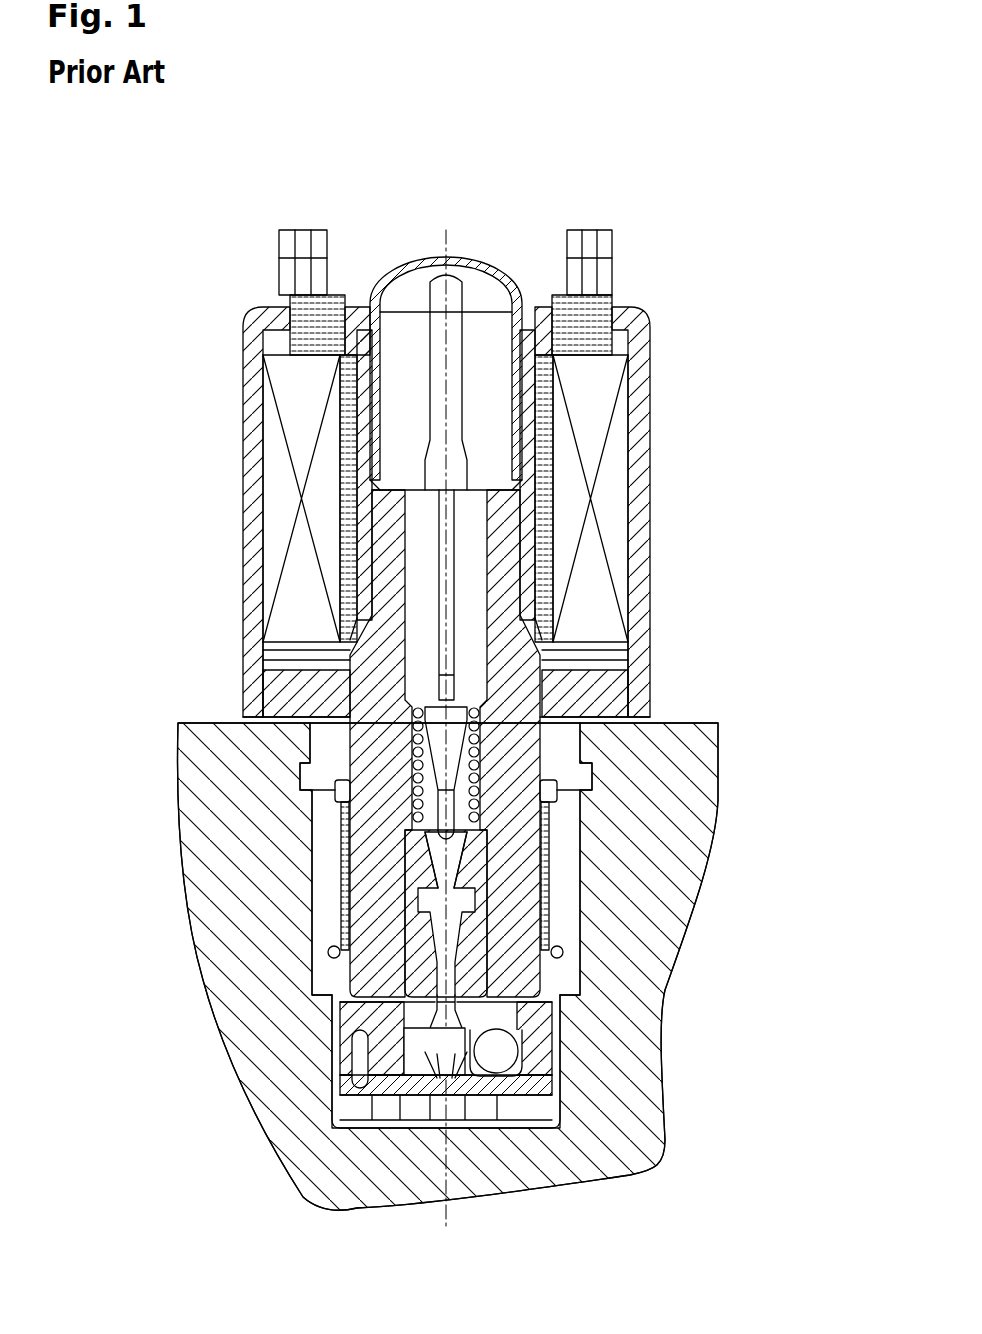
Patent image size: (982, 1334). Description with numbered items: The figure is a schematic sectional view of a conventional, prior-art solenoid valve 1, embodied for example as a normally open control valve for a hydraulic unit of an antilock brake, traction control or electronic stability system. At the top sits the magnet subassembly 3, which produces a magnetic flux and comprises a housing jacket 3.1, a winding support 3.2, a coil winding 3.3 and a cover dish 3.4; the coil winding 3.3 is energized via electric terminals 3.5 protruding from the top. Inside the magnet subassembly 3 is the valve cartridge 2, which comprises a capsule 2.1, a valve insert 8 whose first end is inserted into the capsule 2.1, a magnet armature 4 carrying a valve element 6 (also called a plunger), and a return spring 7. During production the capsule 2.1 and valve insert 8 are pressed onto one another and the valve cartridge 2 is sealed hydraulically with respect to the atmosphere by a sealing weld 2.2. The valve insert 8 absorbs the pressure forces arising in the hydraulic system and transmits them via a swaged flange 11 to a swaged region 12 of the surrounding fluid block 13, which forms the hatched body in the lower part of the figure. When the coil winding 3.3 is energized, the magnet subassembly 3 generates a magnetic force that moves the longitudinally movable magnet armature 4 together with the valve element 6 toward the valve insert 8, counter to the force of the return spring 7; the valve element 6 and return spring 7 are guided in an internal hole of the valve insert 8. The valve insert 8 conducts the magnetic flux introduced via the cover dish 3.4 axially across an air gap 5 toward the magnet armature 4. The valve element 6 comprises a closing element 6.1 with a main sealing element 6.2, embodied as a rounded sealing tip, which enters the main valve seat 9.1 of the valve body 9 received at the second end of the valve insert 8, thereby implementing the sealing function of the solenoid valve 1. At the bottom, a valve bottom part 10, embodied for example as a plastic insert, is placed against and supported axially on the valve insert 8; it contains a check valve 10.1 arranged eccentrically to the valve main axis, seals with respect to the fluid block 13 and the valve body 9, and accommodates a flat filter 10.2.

The solenoid valve 1 is at (185, 260).
The valve cartridge 2 is at (433, 196).
The capsule 2.1 is at (500, 292).
The sealing weld 2.2 is at (362, 571).
The magnet subassembly 3 is at (690, 210).
The housing jacket 3.1 is at (640, 417).
The winding support 3.2 is at (355, 404).
The coil winding 3.3 is at (612, 467).
The cover dish 3.4 is at (610, 688).
The electric terminals 3.5 is at (582, 238).
The magnet armature 4 is at (398, 300).
The air gap 5 is at (390, 494).
The valve element 6 is at (470, 510).
The closing element 6.1 is at (455, 750).
The main sealing element 6.2 is at (432, 843).
The return spring 7 is at (525, 818).
The valve insert 8 is at (552, 857).
The valve body 9 is at (582, 902).
The main valve seat 9.1 is at (442, 860).
The valve bottom part 10 is at (552, 1032).
The check valve 10.1 is at (530, 1122).
The flat filter 10.2 is at (345, 1104).
The swaged flange 11 is at (325, 782).
The swaged region 12 is at (466, 781).
The fluid block 13 is at (212, 747).